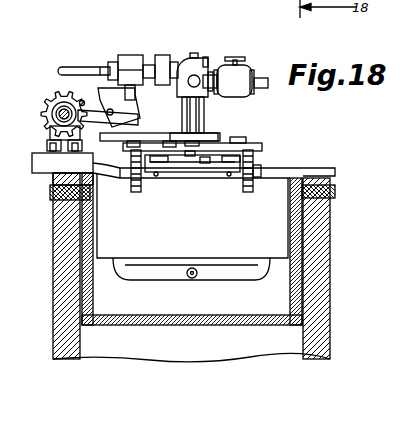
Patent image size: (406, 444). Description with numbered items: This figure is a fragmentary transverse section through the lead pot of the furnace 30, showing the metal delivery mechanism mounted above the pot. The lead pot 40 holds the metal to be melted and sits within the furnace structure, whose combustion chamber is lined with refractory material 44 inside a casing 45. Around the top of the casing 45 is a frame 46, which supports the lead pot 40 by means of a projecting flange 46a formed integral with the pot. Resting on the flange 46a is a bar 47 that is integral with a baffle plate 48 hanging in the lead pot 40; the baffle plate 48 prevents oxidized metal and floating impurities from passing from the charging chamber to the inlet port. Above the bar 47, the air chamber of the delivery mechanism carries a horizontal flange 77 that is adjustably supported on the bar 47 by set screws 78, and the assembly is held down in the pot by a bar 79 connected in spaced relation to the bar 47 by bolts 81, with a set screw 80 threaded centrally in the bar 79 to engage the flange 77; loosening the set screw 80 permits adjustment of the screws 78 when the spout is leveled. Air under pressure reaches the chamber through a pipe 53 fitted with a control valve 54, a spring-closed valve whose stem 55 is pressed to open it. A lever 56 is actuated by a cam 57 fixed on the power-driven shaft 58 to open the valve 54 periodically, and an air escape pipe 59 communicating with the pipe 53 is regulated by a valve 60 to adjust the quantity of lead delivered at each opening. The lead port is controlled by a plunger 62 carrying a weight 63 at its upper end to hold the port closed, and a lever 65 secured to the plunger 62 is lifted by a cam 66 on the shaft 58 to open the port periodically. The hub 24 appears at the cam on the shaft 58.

The air pipe 53 is at (70, 71).
The control valve 54 is at (136, 57).
The plunger 62 is at (193, 56).
The weight 63 is at (206, 60).
The air escape pipe 59 is at (212, 76).
The valve 60 is at (238, 82).
The cam 57 is at (50, 100).
The cam 66 is at (82, 101).
The hub 24 is at (50, 118).
The power-driven shaft 58 is at (50, 140).
The stem 55 is at (130, 103).
The lever 56 is at (130, 125).
The lever 65 is at (106, 135).
The set screws 78 is at (241, 145).
The horizontal flange 77 is at (182, 163).
The set screw 80 is at (206, 162).
The bolts 81 is at (131, 168).
The bar 79 is at (262, 178).
The bar 47 is at (284, 170).
The baffle plate 48 is at (192, 226).
The furnace 30 is at (62, 305).
The casing 45 is at (328, 262).
The refractory material 44 is at (74, 303).
The lead pot 40 is at (55, 179).
The frame 46 is at (60, 192).
The projecting flange 46a is at (330, 178).